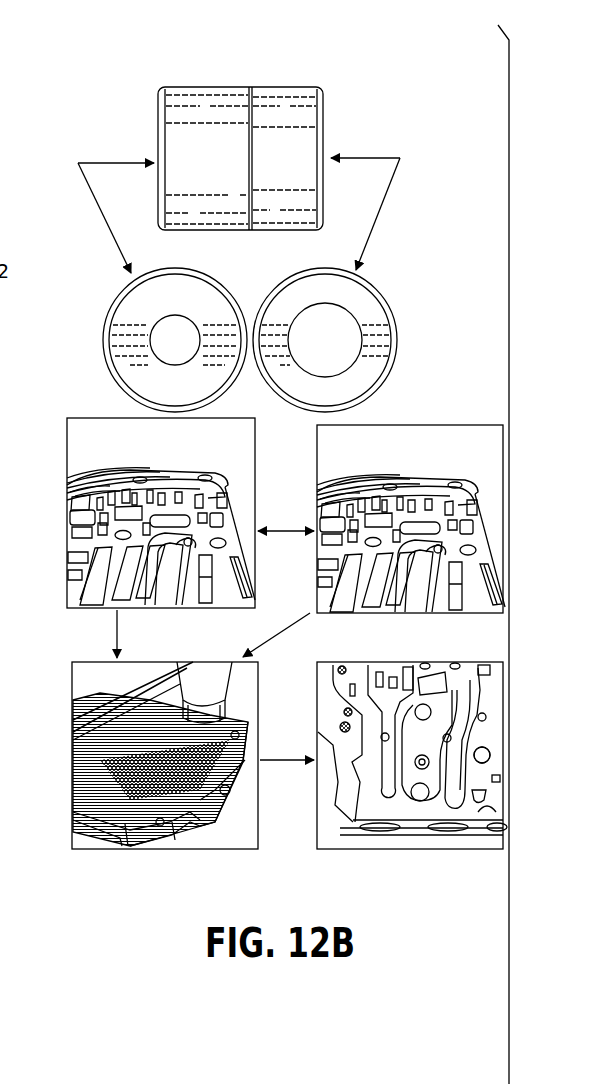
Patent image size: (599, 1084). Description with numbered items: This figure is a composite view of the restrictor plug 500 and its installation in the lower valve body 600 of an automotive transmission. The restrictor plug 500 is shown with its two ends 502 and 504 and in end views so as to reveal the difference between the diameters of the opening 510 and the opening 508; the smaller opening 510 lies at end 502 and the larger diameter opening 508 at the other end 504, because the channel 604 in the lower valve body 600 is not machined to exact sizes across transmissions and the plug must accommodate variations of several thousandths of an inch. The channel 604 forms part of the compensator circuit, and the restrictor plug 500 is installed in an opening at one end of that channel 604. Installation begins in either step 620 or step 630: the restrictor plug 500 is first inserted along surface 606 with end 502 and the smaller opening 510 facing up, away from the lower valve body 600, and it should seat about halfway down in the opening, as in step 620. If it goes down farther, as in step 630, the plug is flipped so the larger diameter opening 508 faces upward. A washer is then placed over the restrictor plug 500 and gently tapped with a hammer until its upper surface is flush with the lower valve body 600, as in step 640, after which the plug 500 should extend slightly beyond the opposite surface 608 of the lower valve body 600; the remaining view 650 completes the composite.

The restrictor plug 500 is at (238, 72).
The end 502 is at (78, 152).
The end 504 is at (402, 150).
The opening 508 is at (360, 322).
The opening 510 is at (151, 328).
The lower valve body 600 is at (180, 460).
The channel 604 is at (165, 600).
The surface 606 is at (75, 468).
The opposite surface 608 is at (493, 733).
The step 620 is at (412, 398).
The step 630 is at (80, 398).
The step 640 is at (212, 854).
The fourth image 650 is at (462, 854).